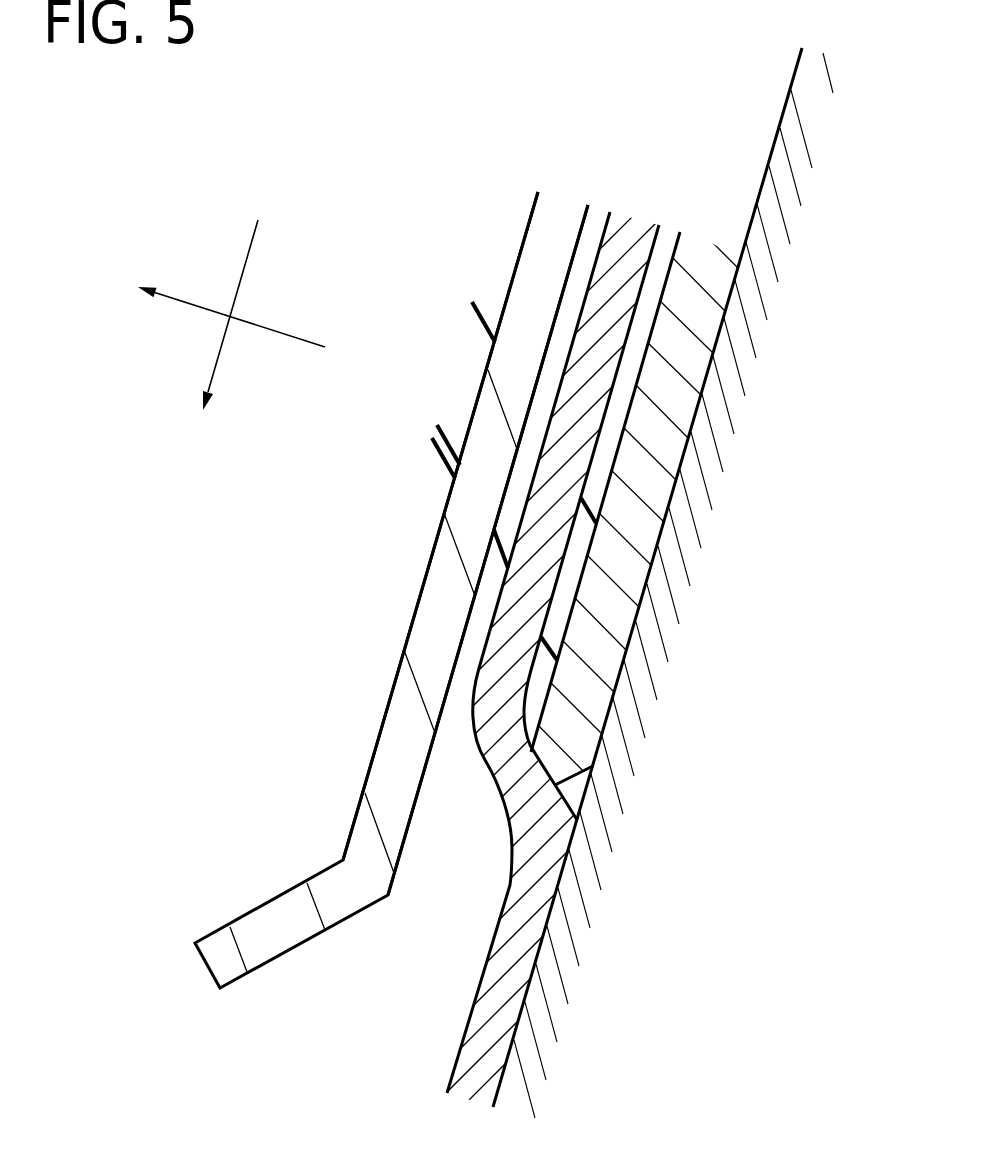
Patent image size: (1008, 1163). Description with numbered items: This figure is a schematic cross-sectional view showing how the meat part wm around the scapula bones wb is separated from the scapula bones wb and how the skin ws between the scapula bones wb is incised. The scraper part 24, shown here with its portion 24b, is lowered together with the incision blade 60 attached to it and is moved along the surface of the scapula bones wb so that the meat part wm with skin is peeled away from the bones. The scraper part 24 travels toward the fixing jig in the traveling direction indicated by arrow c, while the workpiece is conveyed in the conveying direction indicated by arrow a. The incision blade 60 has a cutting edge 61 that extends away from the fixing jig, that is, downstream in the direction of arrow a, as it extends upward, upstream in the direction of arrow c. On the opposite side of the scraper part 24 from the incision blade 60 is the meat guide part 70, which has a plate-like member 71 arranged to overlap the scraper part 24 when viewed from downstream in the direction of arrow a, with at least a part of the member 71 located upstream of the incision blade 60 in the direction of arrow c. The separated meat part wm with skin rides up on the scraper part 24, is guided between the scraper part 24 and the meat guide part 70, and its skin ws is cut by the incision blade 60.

The scraper part 24 is at (687, 577).
The side wall portion of housing 24b is at (668, 404).
The incision blade 60 is at (463, 372).
The cutting edge 61 is at (507, 558).
The meat guide part 70 is at (391, 590).
The plate-like member 71 is at (400, 753).
The conveying direction arrow a is at (192, 302).
The traveling direction arrow c is at (217, 360).
The skin ws is at (482, 973).
The meat part wm is at (487, 1052).
The scapula bones wb is at (573, 918).